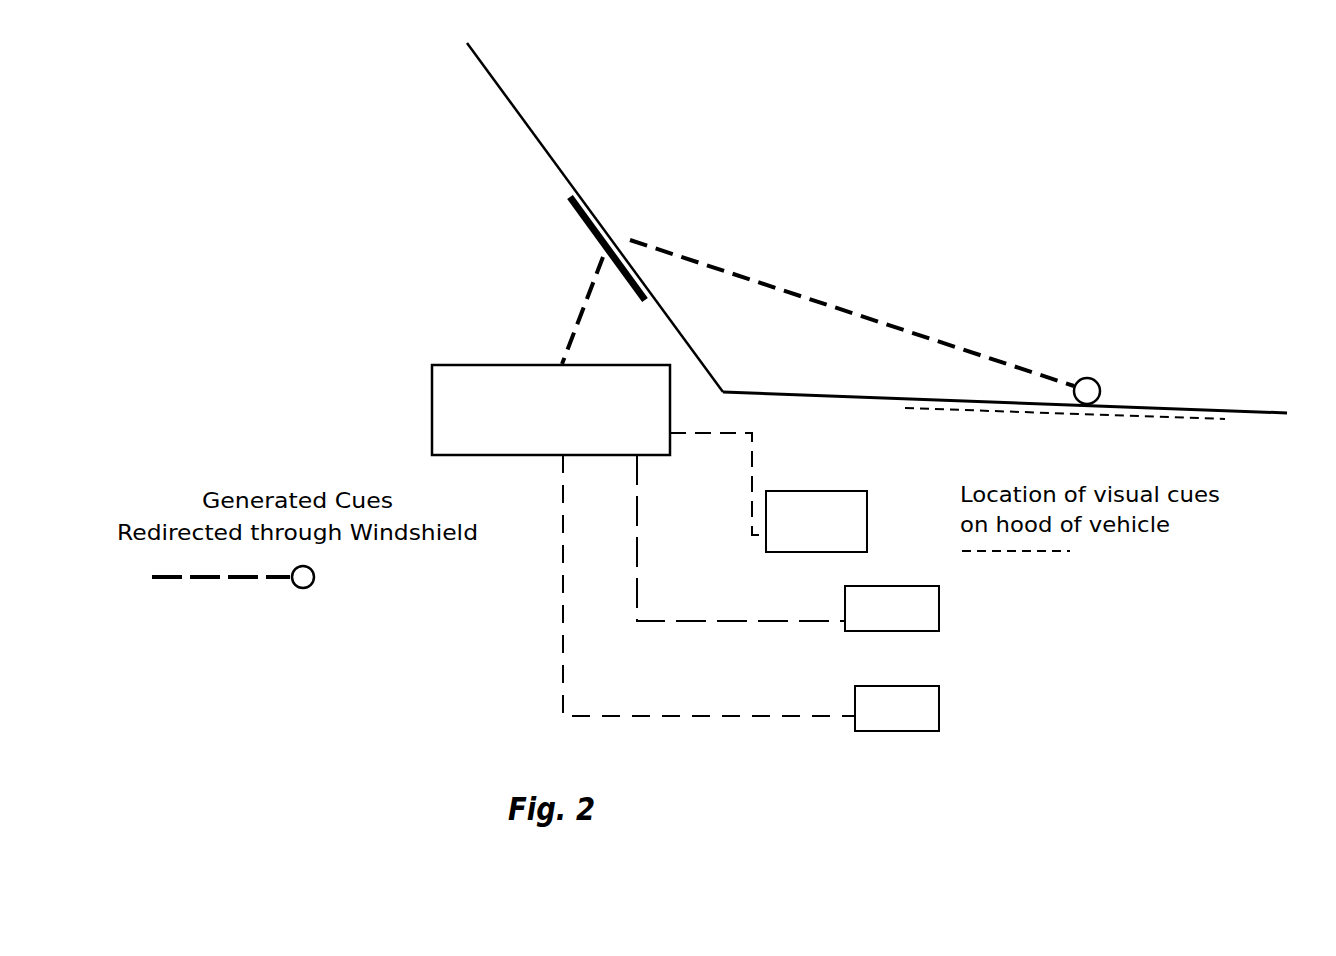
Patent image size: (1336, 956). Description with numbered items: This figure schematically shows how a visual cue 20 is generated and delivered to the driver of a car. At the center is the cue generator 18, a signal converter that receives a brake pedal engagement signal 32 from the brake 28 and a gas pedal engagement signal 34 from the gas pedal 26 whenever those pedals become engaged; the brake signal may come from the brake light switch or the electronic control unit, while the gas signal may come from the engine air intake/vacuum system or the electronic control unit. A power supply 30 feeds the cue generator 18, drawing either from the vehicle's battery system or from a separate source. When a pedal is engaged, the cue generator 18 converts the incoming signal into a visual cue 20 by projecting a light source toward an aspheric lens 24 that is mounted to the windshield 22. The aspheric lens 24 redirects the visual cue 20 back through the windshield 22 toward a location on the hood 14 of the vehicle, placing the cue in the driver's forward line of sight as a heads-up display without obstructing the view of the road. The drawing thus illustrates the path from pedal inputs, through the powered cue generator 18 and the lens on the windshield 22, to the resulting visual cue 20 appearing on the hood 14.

The hood 14 is at (1200, 408).
The cue generator 18 is at (438, 408).
The visual cue 20 is at (1087, 378).
The windshield 22 is at (525, 118).
The aspheric lens 24 is at (590, 230).
The gas pedal 26 is at (939, 714).
The brake 28 is at (939, 603).
The power supply 30 is at (833, 491).
The brake pedal engagement signal 32 is at (743, 623).
The gas pedal engagement signal 34 is at (707, 712).